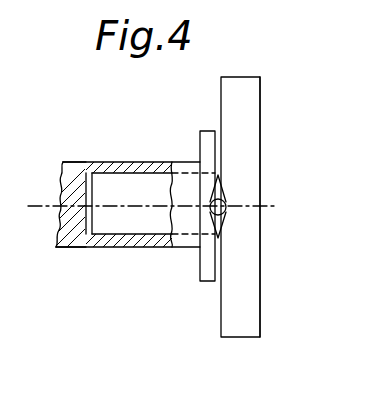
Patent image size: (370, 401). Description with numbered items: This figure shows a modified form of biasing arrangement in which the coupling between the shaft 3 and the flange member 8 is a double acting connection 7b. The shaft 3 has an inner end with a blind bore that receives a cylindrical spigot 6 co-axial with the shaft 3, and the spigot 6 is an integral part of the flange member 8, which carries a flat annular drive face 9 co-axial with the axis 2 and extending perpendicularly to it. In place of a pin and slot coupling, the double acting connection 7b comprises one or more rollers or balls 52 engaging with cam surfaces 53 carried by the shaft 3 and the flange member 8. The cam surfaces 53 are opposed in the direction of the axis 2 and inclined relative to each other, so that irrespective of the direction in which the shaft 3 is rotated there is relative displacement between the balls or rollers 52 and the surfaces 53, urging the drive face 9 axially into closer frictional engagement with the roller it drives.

The axis 2 is at (45, 207).
The shaft 3 is at (73, 161).
The cylindrical spigot 6 is at (107, 233).
The double acting connection 7b is at (272, 193).
The flange member 8 is at (220, 87).
The drive face 9 is at (261, 124).
The rollers or balls 52 is at (236, 199).
The cam surfaces 53 is at (219, 193).